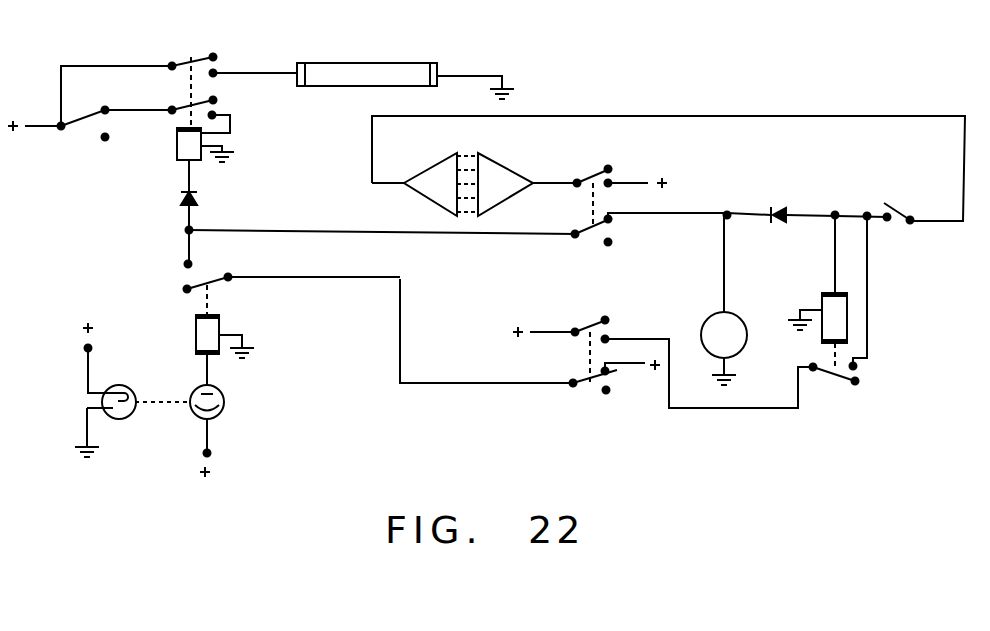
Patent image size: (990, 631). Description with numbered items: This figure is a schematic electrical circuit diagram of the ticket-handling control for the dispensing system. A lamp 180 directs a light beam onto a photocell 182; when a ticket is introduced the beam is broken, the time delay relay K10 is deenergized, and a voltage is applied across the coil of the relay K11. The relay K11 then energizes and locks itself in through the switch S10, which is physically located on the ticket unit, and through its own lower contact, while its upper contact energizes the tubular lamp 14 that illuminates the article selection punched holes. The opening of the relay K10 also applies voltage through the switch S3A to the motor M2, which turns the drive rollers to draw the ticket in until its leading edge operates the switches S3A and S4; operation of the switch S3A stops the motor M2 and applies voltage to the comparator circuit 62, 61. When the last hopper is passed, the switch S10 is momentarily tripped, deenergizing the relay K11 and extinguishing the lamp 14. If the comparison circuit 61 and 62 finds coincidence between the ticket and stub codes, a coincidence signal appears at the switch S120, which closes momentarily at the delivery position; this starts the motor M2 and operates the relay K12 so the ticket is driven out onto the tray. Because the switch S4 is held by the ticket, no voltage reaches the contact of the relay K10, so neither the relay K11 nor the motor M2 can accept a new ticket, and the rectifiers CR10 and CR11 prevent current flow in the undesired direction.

The tubular lamp 14 is at (401, 67).
The switch S10 is at (92, 120).
The relay K11 is at (178, 142).
The rectifier CR10 is at (198, 197).
The comparator circuit 61 is at (414, 184).
The comparator circuit 62 is at (517, 184).
The switch S3A is at (614, 228).
The rectifier CR11 is at (779, 210).
The switch S120 is at (894, 218).
The relay K12 is at (823, 300).
The motor M2 is at (724, 300).
The switch S4 is at (604, 330).
The time delay relay K10 is at (229, 318).
The lamp 180 is at (121, 413).
The photocell 182 is at (222, 400).